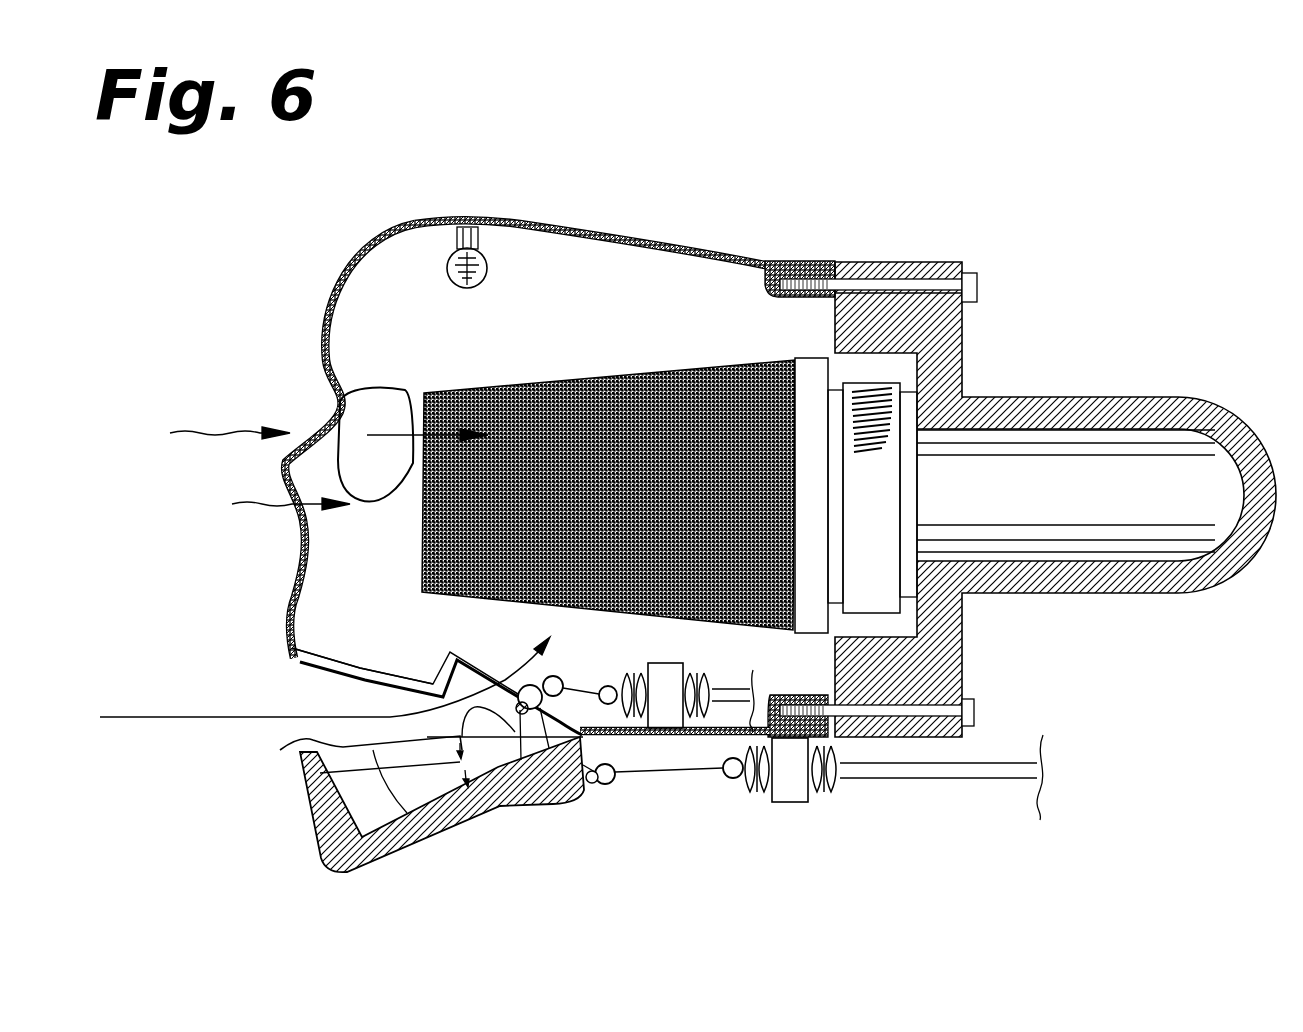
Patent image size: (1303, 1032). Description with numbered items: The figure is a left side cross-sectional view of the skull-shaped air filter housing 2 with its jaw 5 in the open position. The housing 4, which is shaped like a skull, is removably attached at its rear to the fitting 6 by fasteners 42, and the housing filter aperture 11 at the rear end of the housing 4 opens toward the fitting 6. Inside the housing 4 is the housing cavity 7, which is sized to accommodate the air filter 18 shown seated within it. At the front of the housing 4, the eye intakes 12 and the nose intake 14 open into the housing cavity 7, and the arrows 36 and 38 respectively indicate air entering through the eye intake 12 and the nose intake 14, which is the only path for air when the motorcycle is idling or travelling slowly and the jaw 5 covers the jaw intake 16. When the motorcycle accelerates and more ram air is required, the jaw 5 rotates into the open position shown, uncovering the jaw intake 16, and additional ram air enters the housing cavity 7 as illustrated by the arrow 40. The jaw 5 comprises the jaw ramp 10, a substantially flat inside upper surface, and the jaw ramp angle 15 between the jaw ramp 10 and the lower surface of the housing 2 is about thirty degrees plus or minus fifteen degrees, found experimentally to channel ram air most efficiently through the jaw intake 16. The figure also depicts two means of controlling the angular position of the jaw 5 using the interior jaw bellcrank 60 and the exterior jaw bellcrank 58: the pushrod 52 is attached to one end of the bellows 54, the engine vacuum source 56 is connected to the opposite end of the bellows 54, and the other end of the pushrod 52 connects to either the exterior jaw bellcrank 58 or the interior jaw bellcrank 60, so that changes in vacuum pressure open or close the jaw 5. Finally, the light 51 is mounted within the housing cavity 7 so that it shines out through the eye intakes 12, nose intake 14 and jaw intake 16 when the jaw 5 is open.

The skull-shaped air filter housing 2 is at (1012, 118).
The housing 4 is at (582, 232).
The jaw 5 is at (320, 838).
The fitting 6 is at (1225, 398).
The housing cavity 7 is at (403, 253).
The jaw ramp 10 is at (283, 750).
The housing filter aperture 11 is at (830, 623).
The eye intakes 12 is at (395, 430).
The nose intake 14 is at (300, 522).
The jaw ramp angle 15 is at (455, 797).
The jaw intake 16 is at (355, 675).
The air filter 18 is at (672, 365).
The arrow 36 is at (393, 428).
The arrow 38 is at (257, 505).
The arrow 40 is at (270, 716).
The fastener 42 is at (985, 286).
The light 51 is at (490, 262).
The pushrod 52 is at (655, 773).
The bellows 54 is at (742, 800).
The engine vacuum source 56 is at (900, 778).
The exterior jaw bellcrank 58 is at (598, 790).
The interior jaw bellcrank 60 is at (522, 812).